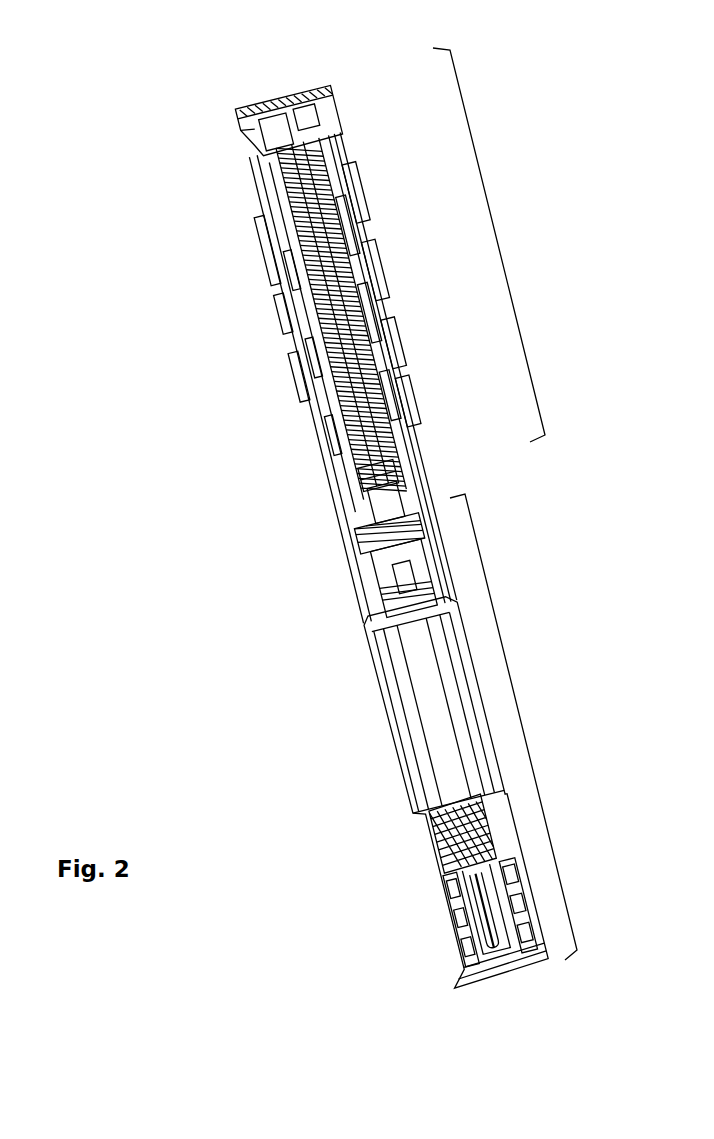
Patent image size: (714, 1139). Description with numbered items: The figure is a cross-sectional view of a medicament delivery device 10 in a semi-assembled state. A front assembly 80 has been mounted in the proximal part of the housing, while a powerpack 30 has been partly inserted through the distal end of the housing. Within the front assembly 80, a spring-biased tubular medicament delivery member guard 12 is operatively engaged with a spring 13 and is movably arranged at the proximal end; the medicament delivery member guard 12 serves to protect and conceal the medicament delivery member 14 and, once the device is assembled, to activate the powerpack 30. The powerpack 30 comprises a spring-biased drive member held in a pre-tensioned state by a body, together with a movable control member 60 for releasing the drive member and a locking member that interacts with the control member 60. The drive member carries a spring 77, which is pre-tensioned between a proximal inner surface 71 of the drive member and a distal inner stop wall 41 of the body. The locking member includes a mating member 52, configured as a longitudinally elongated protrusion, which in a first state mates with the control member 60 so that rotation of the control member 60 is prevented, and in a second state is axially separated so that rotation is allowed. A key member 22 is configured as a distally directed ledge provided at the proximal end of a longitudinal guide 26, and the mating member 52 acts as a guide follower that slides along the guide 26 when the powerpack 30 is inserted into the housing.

The medicament delivery device 10 is at (320, 847).
The medicament delivery member guard 12 is at (456, 928).
The spring 13 is at (478, 958).
The medicament delivery member 14 is at (496, 938).
The key member 22 is at (387, 328).
The longitudinal guide 26 is at (293, 310).
The powerpack 30 is at (500, 238).
The distal inner stop wall 41 is at (295, 150).
The mating member 52 is at (358, 250).
The control member 60 is at (315, 350).
The proximal inner surface 71 is at (380, 480).
The spring 77 is at (380, 457).
The front assembly 80 is at (523, 725).